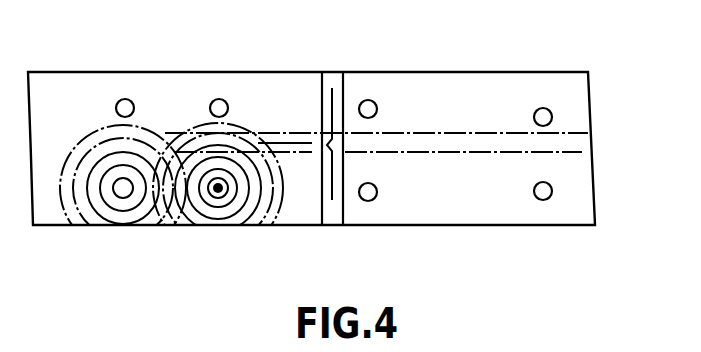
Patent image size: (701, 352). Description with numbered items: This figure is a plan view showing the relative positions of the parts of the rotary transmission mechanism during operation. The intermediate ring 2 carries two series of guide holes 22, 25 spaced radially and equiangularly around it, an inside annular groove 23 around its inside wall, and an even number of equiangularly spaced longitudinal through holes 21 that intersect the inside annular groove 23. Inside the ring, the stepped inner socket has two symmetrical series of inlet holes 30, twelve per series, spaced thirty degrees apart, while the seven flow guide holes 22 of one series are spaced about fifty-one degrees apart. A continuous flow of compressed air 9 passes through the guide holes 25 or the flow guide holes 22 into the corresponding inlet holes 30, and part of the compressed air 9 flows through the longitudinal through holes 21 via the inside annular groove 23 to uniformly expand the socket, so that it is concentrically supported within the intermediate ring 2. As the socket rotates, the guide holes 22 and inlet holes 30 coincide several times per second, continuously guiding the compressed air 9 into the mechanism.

The intermediate ring 2 is at (281, 93).
The longitudinal through holes 21 is at (334, 84).
The flow guide holes 22 is at (218, 98).
The inside annular groove 23 is at (582, 145).
The inlet holes 30 is at (122, 190).
The guide holes 25 is at (221, 196).
The compressed air 9 is at (215, 193).